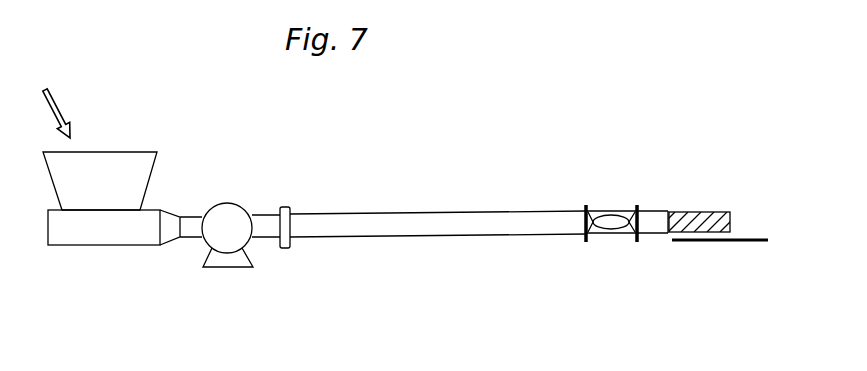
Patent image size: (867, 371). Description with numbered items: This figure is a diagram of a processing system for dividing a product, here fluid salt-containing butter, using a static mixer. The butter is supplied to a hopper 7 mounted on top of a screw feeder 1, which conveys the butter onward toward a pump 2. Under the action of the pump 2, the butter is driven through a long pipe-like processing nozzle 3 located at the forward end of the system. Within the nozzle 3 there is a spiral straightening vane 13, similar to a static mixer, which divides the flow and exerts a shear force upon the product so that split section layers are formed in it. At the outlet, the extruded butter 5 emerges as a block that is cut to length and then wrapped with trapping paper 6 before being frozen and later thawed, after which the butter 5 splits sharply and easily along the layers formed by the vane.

The hopper 7 is at (138, 160).
The screw feeder 1 is at (126, 237).
The pump 2 is at (233, 210).
The processing nozzle 3 is at (438, 218).
The spiral straightening vane 13 is at (609, 221).
The butter 5 is at (702, 218).
The trapping paper 6 is at (757, 239).